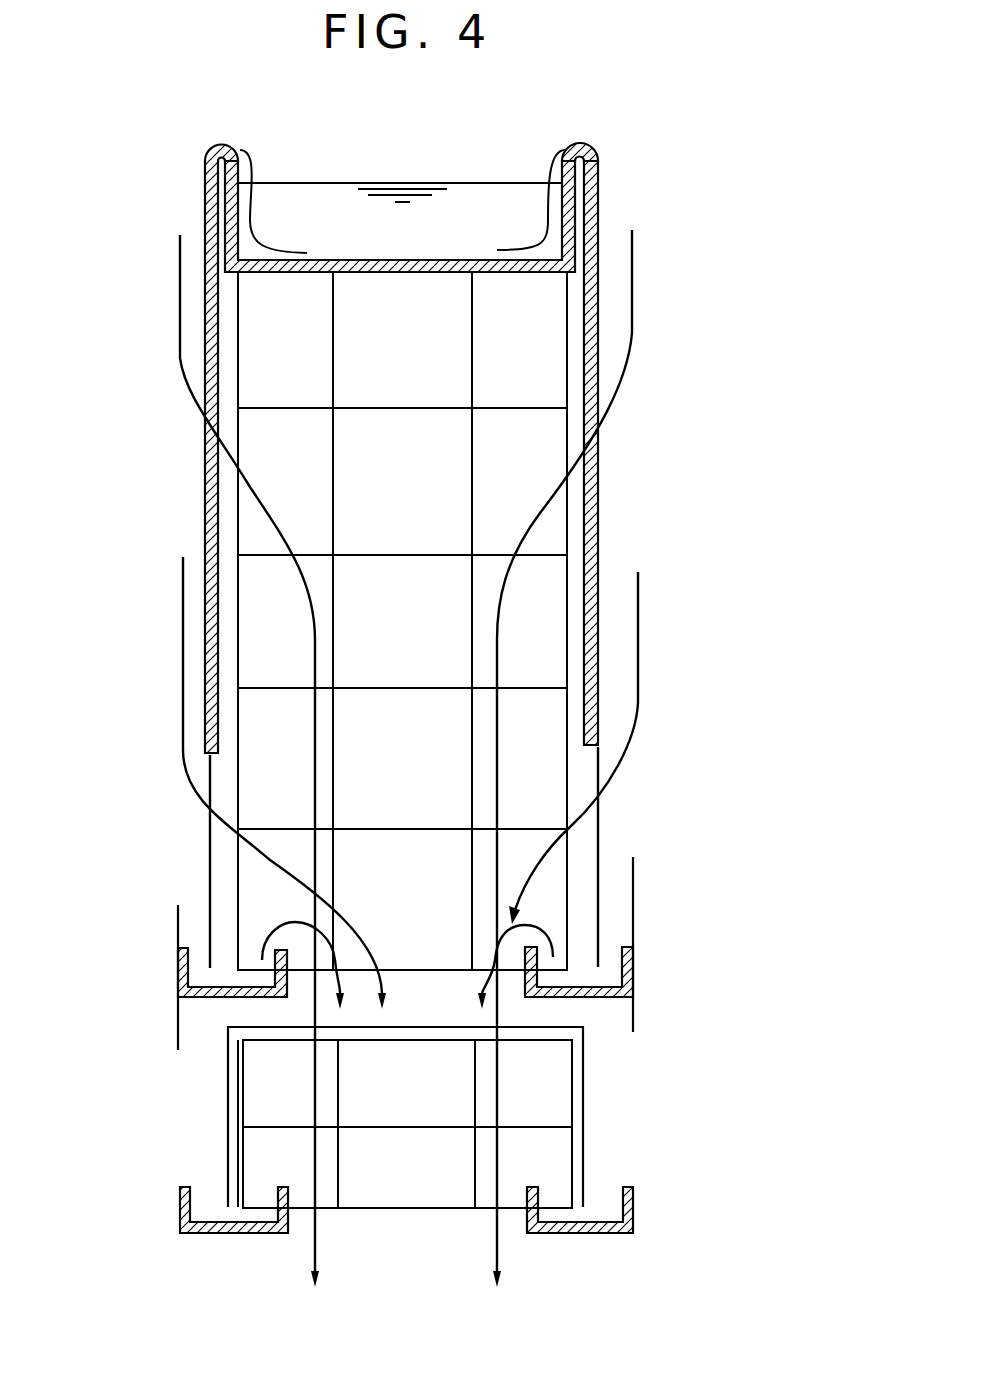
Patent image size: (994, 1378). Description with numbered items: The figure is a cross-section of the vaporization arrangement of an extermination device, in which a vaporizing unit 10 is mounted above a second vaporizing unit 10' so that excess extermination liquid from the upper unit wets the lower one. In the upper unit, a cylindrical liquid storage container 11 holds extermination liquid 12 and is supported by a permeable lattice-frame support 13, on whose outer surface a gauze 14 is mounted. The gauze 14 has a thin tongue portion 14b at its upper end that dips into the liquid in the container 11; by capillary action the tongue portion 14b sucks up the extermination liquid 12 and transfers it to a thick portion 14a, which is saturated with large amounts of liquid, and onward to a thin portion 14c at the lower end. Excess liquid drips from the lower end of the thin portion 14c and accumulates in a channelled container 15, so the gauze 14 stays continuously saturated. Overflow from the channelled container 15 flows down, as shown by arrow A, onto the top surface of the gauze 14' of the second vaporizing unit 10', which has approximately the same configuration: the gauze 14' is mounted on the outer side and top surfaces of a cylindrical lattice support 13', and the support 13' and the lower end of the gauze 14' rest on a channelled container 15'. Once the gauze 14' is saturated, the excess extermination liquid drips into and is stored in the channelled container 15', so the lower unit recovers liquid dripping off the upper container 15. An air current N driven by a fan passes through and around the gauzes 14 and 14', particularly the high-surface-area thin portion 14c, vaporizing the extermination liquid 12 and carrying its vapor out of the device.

The vaporizing unit 10 is at (466, 758).
The second vaporizing unit 10' is at (513, 1104).
The liquid storage container 11 is at (583, 187).
The extermination liquid 12 is at (453, 210).
The support 13 is at (349, 621).
The support 13' is at (488, 1124).
The gauze 14 is at (401, 446).
The gauze 14' is at (473, 1117).
The thick portion 14a is at (597, 533).
The tongue portion 14b is at (513, 247).
The thin portion 14c is at (600, 827).
The channelled container 15 is at (409, 957).
The channelled container 15' is at (414, 1221).
The air current N is at (180, 358).
The arrow A is at (278, 934).